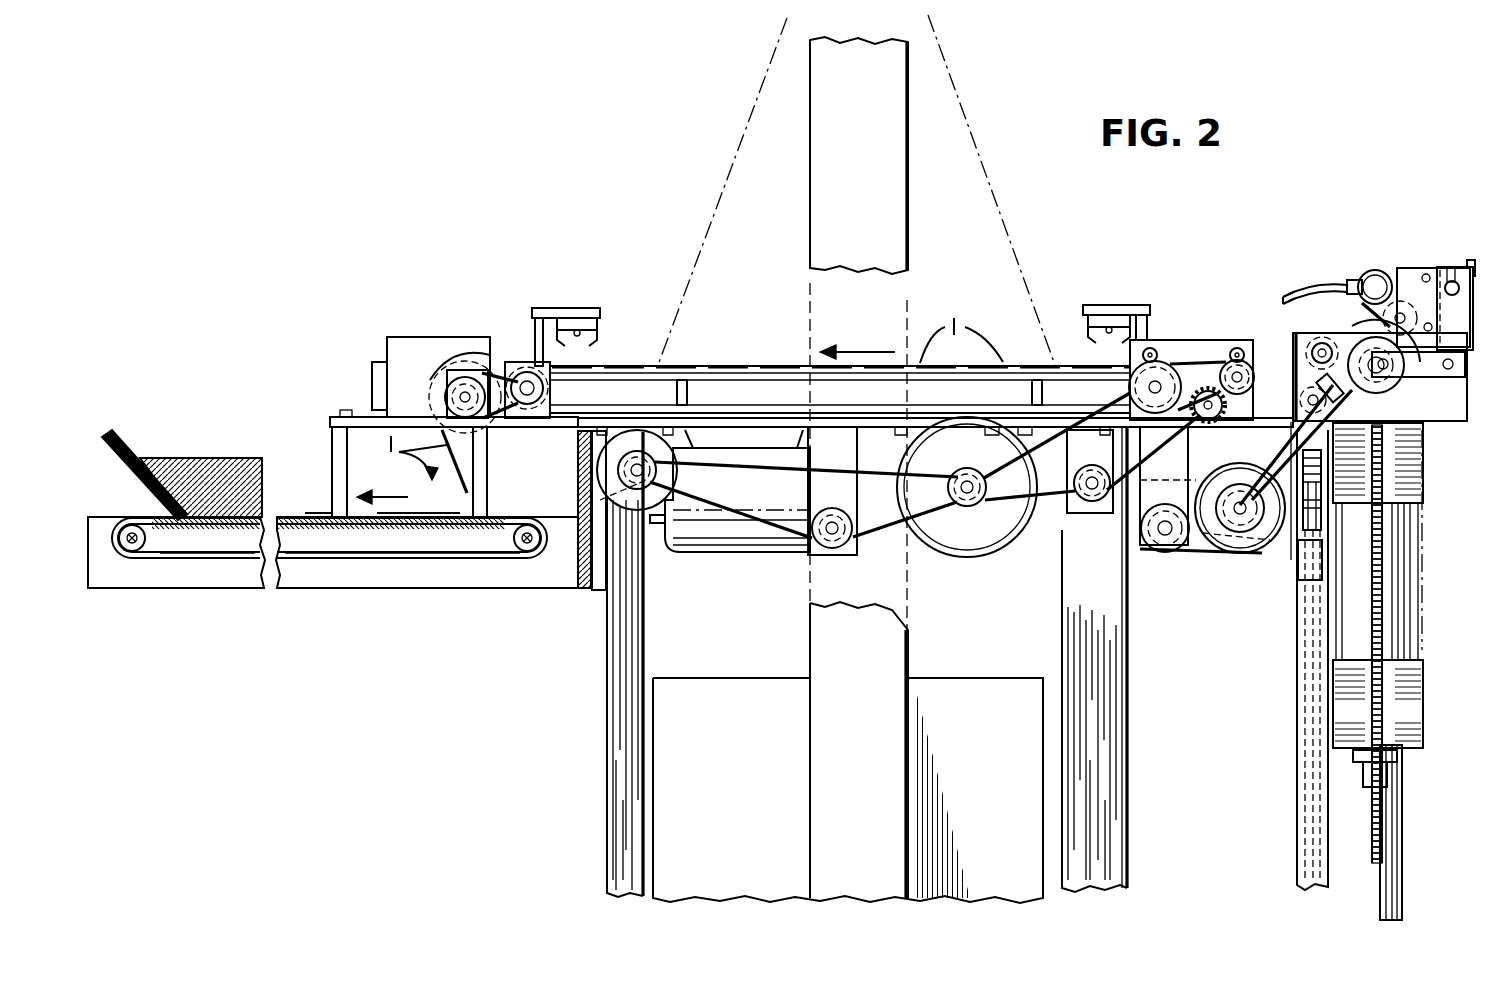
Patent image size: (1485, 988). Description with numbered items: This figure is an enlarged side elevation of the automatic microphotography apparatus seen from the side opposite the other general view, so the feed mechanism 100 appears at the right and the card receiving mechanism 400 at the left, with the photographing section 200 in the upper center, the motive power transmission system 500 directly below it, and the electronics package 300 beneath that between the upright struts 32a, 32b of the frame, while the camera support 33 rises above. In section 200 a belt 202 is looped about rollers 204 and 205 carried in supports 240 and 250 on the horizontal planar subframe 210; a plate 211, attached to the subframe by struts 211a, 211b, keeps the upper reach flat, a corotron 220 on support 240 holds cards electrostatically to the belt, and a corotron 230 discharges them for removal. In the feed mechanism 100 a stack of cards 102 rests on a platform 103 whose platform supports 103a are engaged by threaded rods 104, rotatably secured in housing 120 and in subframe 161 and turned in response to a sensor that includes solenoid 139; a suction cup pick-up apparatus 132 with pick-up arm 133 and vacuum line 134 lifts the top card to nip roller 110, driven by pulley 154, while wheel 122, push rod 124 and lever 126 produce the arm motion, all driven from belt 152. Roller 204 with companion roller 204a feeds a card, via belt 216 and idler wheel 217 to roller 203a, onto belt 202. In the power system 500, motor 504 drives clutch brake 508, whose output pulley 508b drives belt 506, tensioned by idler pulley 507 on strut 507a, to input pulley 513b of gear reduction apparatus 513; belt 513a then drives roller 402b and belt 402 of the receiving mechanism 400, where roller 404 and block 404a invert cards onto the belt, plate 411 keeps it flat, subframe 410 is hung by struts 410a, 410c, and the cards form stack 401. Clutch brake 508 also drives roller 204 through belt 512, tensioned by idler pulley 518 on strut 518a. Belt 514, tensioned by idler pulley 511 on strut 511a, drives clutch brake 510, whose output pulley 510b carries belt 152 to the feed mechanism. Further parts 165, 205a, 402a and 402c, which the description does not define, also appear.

The camera support 33 is at (826, 135).
The feed mechanism 100 is at (1422, 222).
The stack of cards 102 is at (1420, 455).
The platform 103 is at (1410, 748).
The platform supports 103a is at (1388, 775).
The threaded rods 104 is at (1383, 830).
The nip roller 110 is at (1300, 345).
The housing 120 is at (1428, 406).
The wheel 122 is at (1370, 395).
The push rod 124 is at (1400, 340).
The lever 126 is at (1455, 270).
The suction cup pick-up apparatus 132 is at (1373, 270).
The suction cup pick-up arm 133 is at (1348, 290).
The vacuum line 134 is at (1303, 290).
The solenoid 139 is at (1308, 570).
The belt 152 is at (1321, 517).
The pulley 154 is at (1316, 342).
The subframe 161 is at (1310, 835).
The rail 165 is at (1395, 890).
The photographing section 200 is at (945, 250).
The belt 202 is at (762, 366).
The roller 203a is at (1240, 358).
The roller 204 is at (1175, 365).
The companion roller 204a is at (1158, 345).
The roller 205 is at (525, 368).
The belt 205a is at (510, 408).
The horizontal planar subframe 210 is at (875, 427).
The plate 211 is at (724, 366).
The strut 211a is at (1030, 390).
The strut 211b is at (675, 390).
The belt 216 is at (1232, 418).
The idler wheel 217 is at (1188, 425).
The corotron 220 is at (1105, 303).
The corotron 230 is at (580, 305).
The support 240 is at (1220, 340).
The support 250 is at (565, 390).
The electronics package 300 is at (677, 773).
The upright strut 32a is at (612, 668).
The upright strut 32b is at (1110, 683).
The card receiving mechanism 400 is at (245, 378).
The stack 401 is at (196, 458).
The belt 402 is at (342, 556).
The guide plate 402a is at (128, 438).
The roller 402b is at (520, 552).
The pulley 402c is at (134, 552).
The roller 404 is at (466, 370).
The block 404a is at (410, 335).
The subframe 410 is at (212, 600).
The strut 410a is at (585, 590).
The strut 410c is at (335, 445).
The plate 411 is at (385, 545).
The motive power transmission system 500 is at (755, 576).
The motor 504 is at (700, 548).
The belt 506 is at (865, 535).
The idler pulley 507 is at (832, 548).
The strut 507a is at (825, 430).
The clutch brake 508 is at (985, 555).
The output pulley 508b is at (967, 506).
The clutch brake 510 is at (1262, 548).
The output pulley 510b is at (1243, 533).
The idler pulley 511 is at (1158, 553).
The strut 511a is at (1143, 497).
The belt 512 is at (1037, 520).
The gear reduction apparatus 513 is at (608, 455).
The belt 513a is at (608, 477).
The input pulley 513b is at (660, 478).
The belt 514 is at (1165, 552).
The idler pulley 518 is at (1100, 503).
The strut 518a is at (1094, 440).